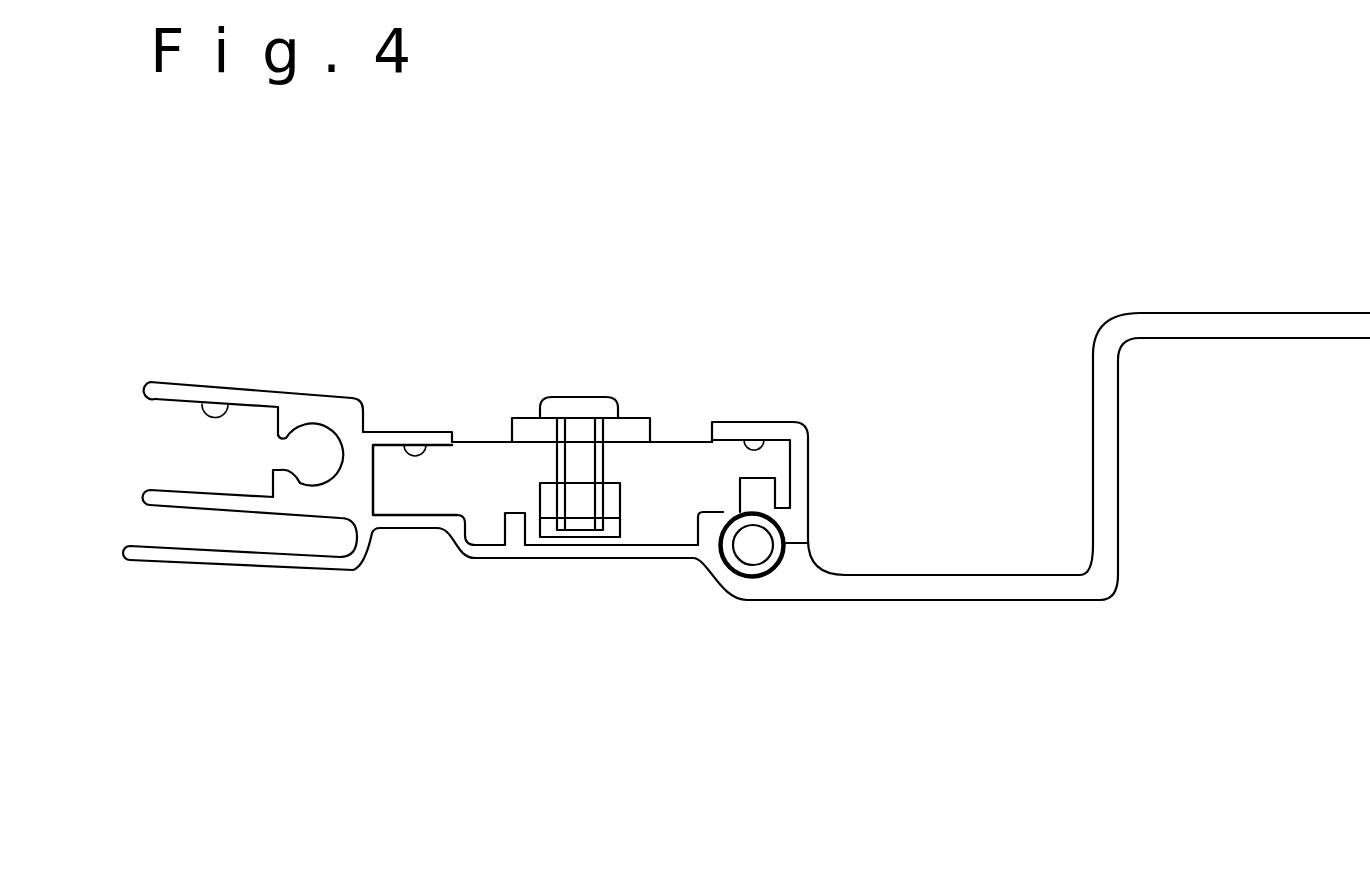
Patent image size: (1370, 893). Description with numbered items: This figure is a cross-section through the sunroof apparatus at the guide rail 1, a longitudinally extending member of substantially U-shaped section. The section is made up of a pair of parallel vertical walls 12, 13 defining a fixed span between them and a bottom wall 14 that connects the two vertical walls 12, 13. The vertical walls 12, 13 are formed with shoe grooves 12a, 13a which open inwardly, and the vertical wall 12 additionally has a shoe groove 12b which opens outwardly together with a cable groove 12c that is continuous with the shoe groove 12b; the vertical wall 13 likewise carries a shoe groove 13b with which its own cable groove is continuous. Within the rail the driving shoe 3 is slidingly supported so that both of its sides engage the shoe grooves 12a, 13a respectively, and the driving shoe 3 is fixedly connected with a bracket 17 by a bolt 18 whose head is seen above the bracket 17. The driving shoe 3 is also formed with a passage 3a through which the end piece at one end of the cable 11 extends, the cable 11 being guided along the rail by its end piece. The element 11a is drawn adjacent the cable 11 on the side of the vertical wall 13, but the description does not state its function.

The guide rail 1 is at (149, 371).
The driving shoe 3 is at (492, 435).
The passage 3a is at (758, 507).
The cable 11 is at (755, 547).
The hinge pin holder 11a is at (775, 515).
The vertical wall 12 is at (305, 413).
The shoe groove 12a is at (403, 440).
The shoe groove 12b is at (210, 402).
The cable groove 12c is at (300, 475).
The vertical wall 13 is at (800, 463).
The shoe groove 13a is at (752, 440).
The shoe groove 13b is at (767, 537).
The bottom wall 14 is at (552, 550).
The bracket 17 is at (628, 427).
The bolt 18 is at (580, 403).